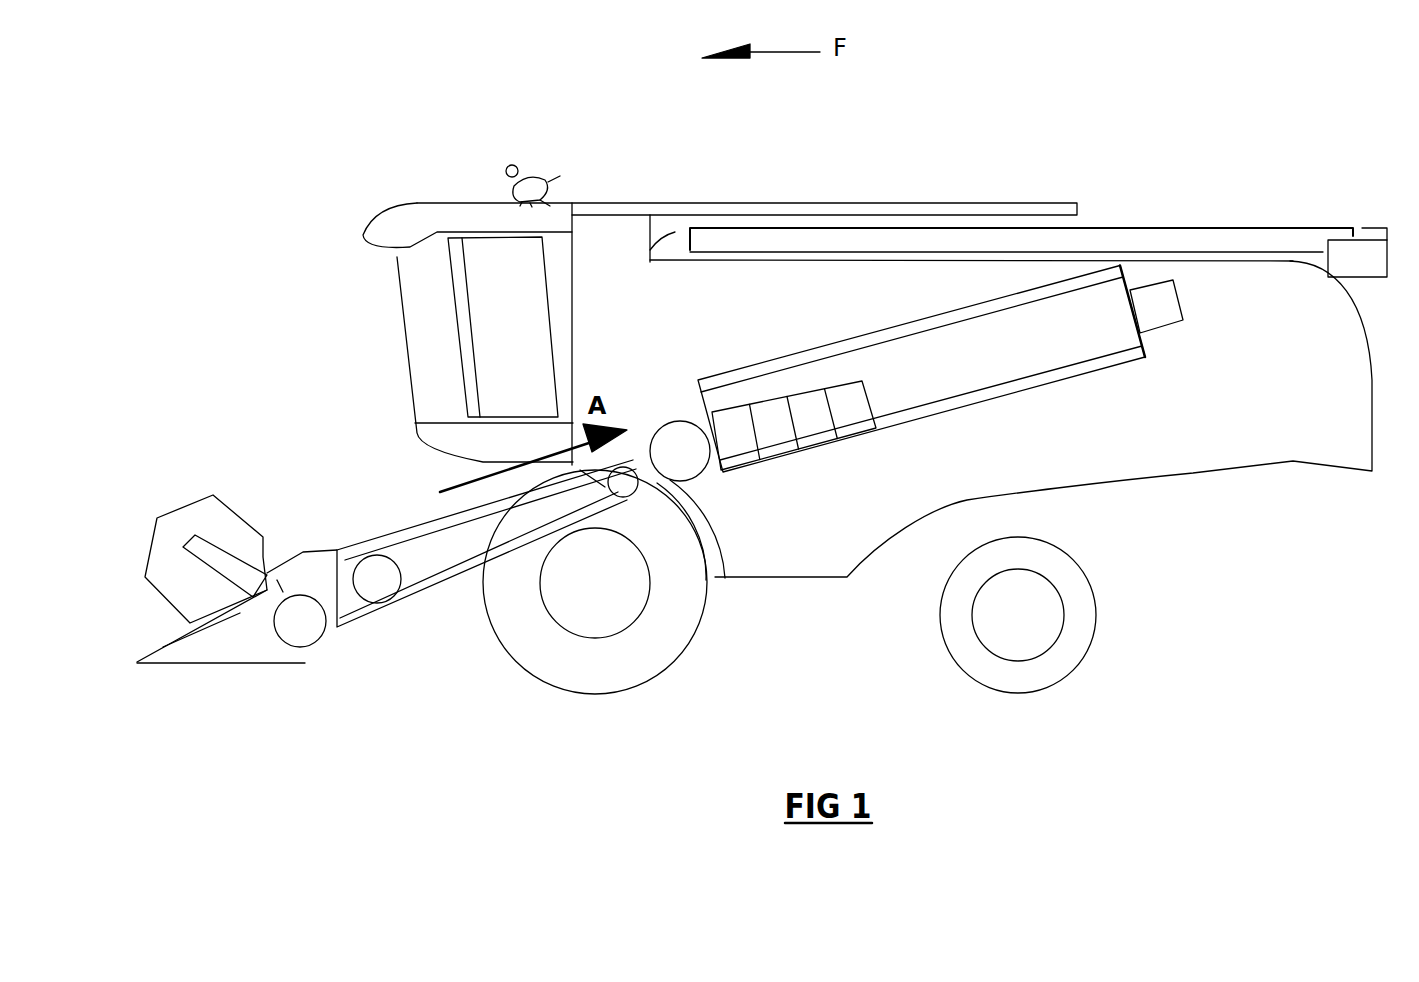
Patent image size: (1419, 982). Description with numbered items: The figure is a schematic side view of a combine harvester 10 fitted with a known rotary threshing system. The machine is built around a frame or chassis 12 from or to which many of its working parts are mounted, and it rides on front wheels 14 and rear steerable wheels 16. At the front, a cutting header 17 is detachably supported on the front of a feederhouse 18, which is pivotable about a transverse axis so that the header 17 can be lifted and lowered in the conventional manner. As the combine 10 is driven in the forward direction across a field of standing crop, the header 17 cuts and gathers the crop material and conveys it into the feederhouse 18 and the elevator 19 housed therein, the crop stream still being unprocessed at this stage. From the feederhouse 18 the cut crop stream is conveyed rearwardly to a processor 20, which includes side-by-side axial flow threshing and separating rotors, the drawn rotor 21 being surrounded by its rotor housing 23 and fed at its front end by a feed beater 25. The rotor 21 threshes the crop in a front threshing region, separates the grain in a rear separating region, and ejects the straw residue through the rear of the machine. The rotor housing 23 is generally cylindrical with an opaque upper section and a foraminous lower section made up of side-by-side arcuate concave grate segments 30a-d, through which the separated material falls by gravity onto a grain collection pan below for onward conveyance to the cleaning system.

The combine harvester 10 is at (1216, 168).
The frame or chassis 12 is at (847, 575).
The front wheels 14 is at (680, 647).
The rear steerable wheels 16 is at (1090, 647).
The cutting header 17 is at (140, 661).
The feederhouse 18 is at (383, 606).
The elevator 19 is at (403, 538).
The processor 20 is at (800, 326).
The axial flow threshing and separating rotor 21 is at (1055, 375).
The rotor housing 23 is at (1133, 365).
The feed beater 25 is at (673, 438).
The arcuate concave grate segments 30a-d is at (855, 434).